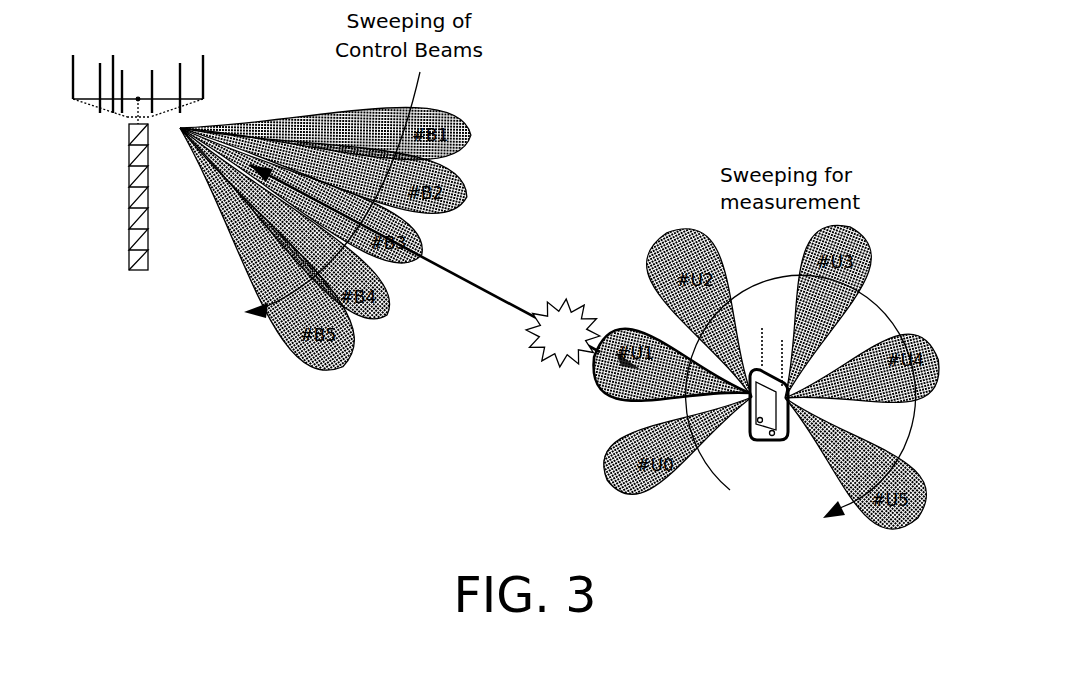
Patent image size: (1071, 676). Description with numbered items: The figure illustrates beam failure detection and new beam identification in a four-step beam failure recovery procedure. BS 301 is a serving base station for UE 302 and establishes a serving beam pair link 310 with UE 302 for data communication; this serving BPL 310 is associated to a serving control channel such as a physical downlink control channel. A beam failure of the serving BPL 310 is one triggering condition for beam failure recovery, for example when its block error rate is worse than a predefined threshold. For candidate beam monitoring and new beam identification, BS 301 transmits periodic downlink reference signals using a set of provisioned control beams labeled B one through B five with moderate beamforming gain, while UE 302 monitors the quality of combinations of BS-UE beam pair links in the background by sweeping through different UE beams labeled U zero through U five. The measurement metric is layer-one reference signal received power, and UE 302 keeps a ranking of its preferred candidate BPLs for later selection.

The BS 301 is at (143, 60).
The UE 302 is at (770, 338).
The serving beam pair link (BPL) 310 is at (465, 294).